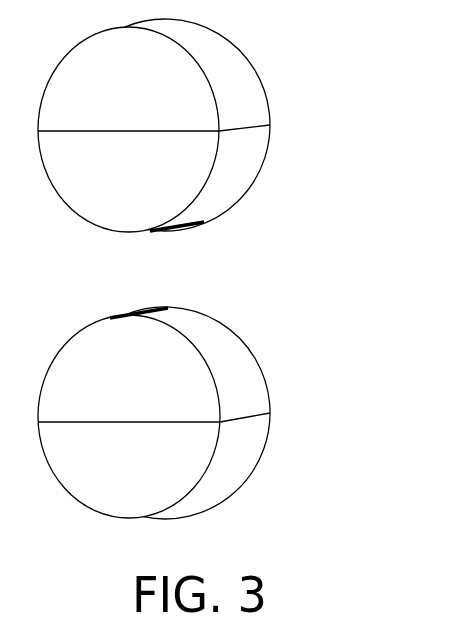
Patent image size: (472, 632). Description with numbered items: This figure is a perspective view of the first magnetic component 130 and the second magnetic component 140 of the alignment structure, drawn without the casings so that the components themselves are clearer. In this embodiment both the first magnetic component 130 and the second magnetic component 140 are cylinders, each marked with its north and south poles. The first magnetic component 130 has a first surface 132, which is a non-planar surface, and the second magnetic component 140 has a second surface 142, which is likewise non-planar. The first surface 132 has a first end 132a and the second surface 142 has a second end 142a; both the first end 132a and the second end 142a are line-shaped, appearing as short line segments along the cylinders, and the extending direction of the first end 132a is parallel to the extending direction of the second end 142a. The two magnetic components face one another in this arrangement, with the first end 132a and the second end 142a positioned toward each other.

The first magnetic component 130 is at (235, 462).
The first surface 132 is at (235, 382).
The first end 132a is at (136, 314).
The second magnetic component 140 is at (233, 80).
The second surface 142 is at (240, 163).
The second end 142a is at (175, 241).